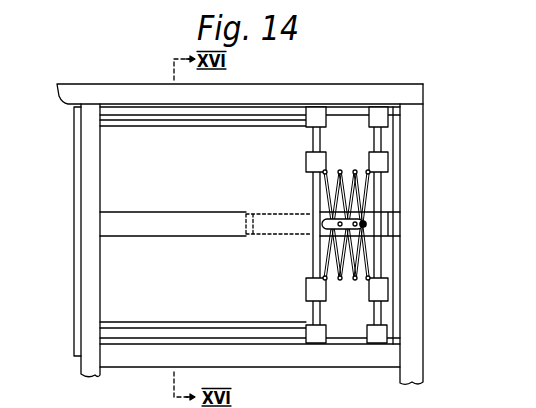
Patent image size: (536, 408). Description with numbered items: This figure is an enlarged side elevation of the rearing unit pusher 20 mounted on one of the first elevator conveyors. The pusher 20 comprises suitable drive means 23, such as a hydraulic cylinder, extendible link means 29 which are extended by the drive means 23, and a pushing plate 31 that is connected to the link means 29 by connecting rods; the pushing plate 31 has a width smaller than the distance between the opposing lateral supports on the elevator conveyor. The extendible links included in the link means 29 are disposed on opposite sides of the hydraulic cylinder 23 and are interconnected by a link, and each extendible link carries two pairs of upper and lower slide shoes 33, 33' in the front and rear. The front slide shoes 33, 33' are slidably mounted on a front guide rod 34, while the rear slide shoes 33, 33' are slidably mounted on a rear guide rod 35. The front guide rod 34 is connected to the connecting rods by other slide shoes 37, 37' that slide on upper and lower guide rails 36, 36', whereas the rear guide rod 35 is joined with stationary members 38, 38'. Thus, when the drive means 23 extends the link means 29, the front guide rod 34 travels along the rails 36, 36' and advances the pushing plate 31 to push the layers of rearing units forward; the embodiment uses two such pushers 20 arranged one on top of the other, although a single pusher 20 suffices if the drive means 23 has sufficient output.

The rearing unit pusher 20 is at (217, 177).
The drive means 23 is at (275, 228).
The extendible link means 29 is at (356, 279).
The pushing plate 31 is at (77, 224).
The upper slide shoes 33 is at (382, 150).
The lower slide shoes 33' is at (367, 285).
The front guide rod 34 is at (315, 200).
The rear guide rod 35 is at (378, 197).
The upper guide rail 36 is at (240, 81).
The lower guide rail 36' is at (250, 330).
The upper slide shoe 37 is at (324, 90).
The upper stationary member 38 is at (390, 90).
The lower slide shoe 37' is at (313, 363).
The lower stationary member 38' is at (376, 364).